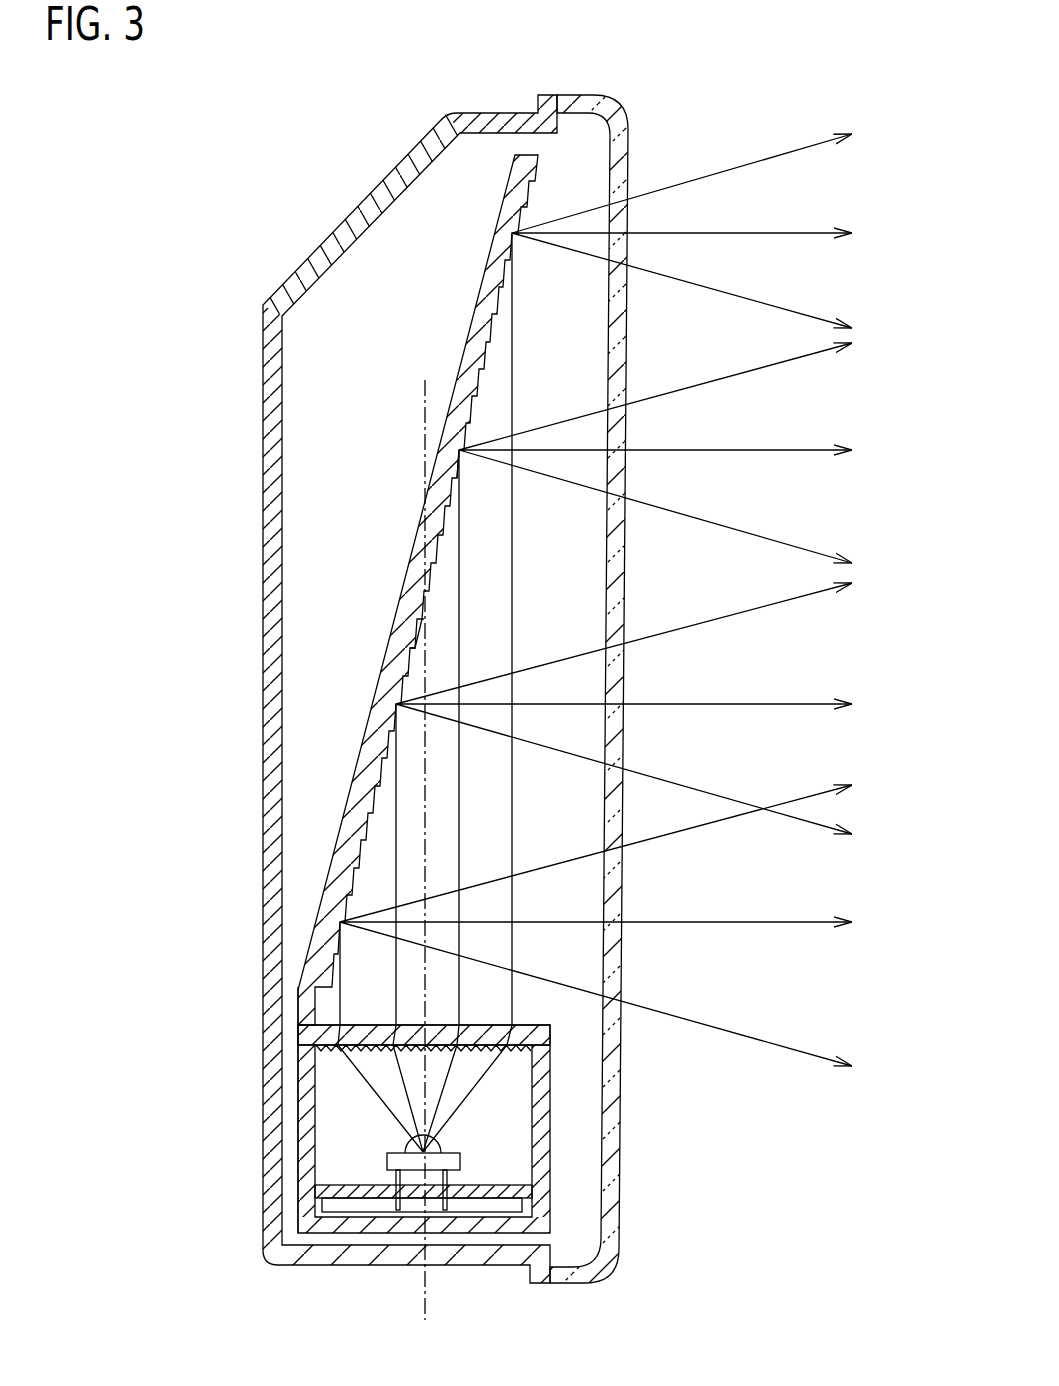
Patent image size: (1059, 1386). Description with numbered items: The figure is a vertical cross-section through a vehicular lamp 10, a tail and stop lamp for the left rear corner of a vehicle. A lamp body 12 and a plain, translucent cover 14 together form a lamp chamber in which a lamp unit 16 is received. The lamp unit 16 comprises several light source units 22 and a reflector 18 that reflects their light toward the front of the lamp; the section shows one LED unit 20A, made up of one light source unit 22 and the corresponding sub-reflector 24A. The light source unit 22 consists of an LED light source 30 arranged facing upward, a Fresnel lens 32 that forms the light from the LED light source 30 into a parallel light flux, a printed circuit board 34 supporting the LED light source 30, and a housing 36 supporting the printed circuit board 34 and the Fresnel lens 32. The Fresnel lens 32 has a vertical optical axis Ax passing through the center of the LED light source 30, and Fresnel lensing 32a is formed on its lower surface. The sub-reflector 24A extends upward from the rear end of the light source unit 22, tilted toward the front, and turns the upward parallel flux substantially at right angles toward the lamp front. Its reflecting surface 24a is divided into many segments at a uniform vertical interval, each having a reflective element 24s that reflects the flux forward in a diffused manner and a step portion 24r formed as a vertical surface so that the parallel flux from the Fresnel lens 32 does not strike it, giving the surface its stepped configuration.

The vehicular lamp 10 is at (343, 153).
The lamp body 12 is at (312, 257).
The translucent cover 14 is at (632, 368).
The lamp unit 16 is at (345, 423).
The reflector 18 is at (388, 623).
The LED unit 20A is at (373, 548).
The light source unit 22 is at (288, 1071).
The sub-reflector 24A is at (463, 350).
The reflecting surface 24a is at (420, 645).
The reflective element 24s is at (475, 451).
The step portion 24r is at (462, 466).
The LED light source 30 is at (413, 1143).
The Fresnel lens 32 is at (515, 1027).
The Fresnel lensing 32a is at (360, 1044).
The printed circuit board 34 is at (483, 1187).
The housing 36 is at (548, 1118).
The optical axis Ax is at (427, 851).